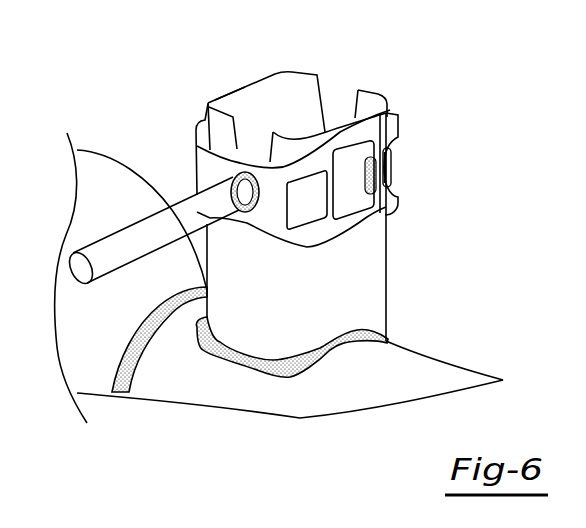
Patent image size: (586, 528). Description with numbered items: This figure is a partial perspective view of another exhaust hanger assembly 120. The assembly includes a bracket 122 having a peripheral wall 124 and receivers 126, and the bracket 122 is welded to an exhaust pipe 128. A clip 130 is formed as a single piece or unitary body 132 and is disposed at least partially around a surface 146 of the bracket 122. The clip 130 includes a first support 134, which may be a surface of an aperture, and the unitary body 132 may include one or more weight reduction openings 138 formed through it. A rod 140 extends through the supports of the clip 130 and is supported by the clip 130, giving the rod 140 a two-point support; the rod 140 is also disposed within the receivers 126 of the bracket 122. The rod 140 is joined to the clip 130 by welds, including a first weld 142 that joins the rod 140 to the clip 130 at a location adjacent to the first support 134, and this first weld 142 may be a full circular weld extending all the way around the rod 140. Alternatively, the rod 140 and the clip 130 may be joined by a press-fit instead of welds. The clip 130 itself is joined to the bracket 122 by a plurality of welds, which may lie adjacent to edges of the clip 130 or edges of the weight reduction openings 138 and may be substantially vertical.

The exhaust hanger assembly 120 is at (124, 84).
The bracket 122 is at (292, 82).
The peripheral wall 124 is at (237, 93).
The receivers 126 is at (228, 137).
The exhaust pipe 128 is at (433, 367).
The clip 130 is at (393, 127).
The unitary body 132 is at (273, 222).
The first support 134 is at (251, 215).
The weight reduction openings 138 is at (390, 177).
The rod 140 is at (103, 280).
The first weld 142 is at (198, 157).
The surface 146 is at (368, 290).